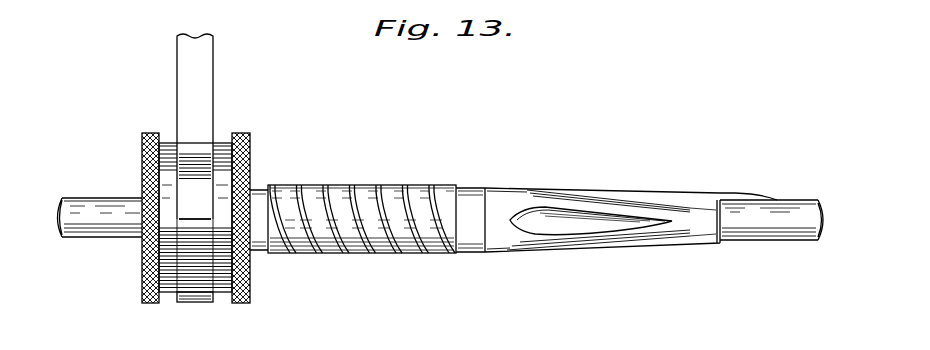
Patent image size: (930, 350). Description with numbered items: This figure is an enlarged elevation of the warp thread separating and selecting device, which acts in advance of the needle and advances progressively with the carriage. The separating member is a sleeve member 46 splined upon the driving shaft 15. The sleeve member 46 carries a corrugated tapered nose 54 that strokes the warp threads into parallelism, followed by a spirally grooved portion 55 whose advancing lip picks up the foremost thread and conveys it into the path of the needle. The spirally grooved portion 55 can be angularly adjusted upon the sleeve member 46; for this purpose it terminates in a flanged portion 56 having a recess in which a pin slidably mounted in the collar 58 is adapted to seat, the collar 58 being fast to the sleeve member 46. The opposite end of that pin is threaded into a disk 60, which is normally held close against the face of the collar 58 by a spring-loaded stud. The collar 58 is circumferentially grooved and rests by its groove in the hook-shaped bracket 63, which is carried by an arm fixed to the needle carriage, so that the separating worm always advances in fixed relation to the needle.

The driving shaft 15 is at (100, 234).
The sleeve member 46 is at (702, 208).
The corrugated tapered nose 54 is at (560, 216).
The spirally grooved portion 55 is at (392, 192).
The flanged portion 56 is at (251, 156).
The collar 58 is at (170, 293).
The disk 60 is at (143, 157).
The hook-shaped bracket 63 is at (213, 98).